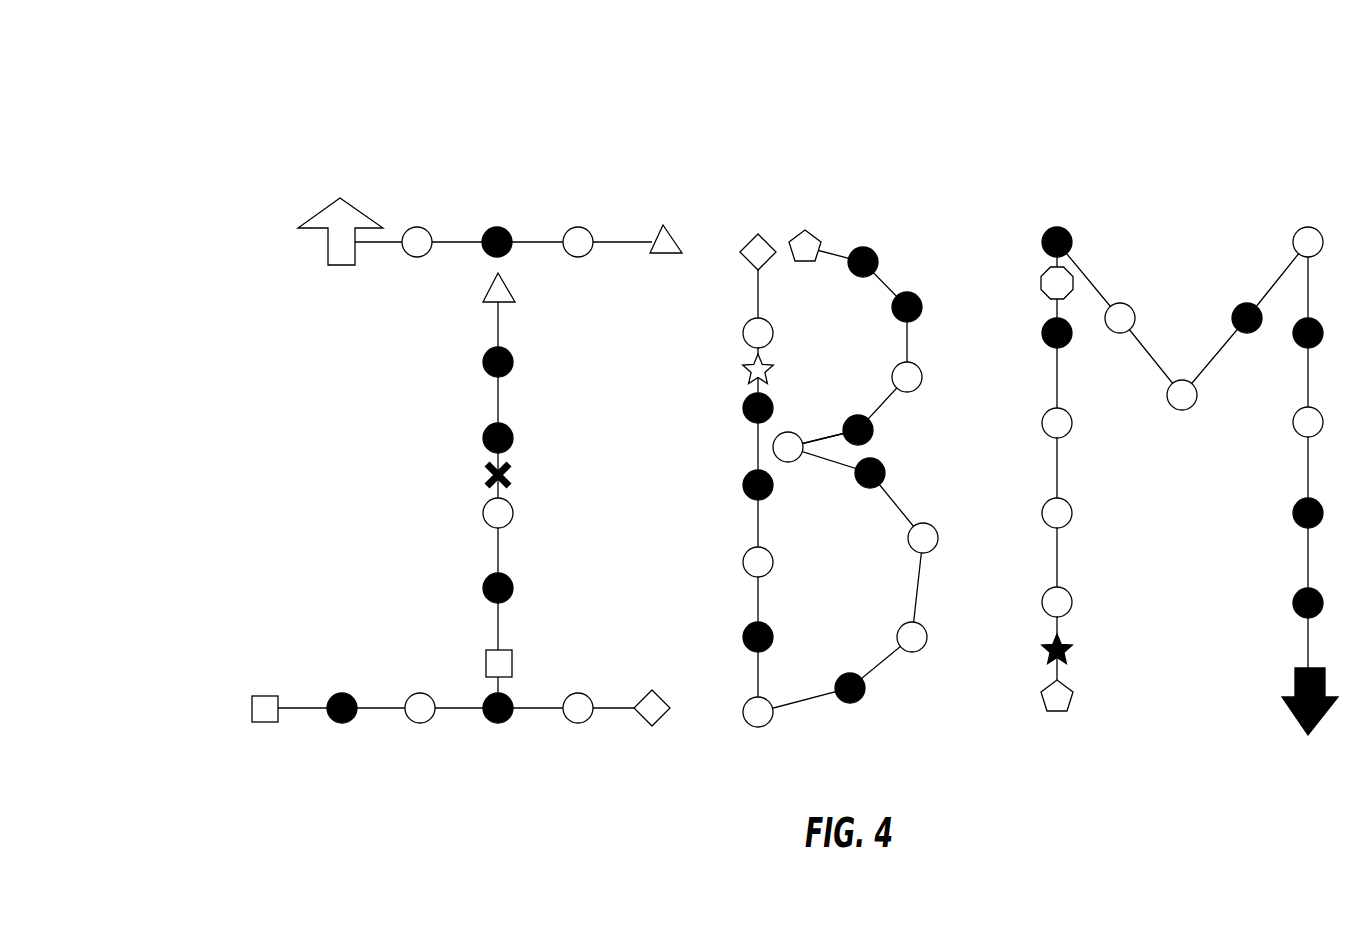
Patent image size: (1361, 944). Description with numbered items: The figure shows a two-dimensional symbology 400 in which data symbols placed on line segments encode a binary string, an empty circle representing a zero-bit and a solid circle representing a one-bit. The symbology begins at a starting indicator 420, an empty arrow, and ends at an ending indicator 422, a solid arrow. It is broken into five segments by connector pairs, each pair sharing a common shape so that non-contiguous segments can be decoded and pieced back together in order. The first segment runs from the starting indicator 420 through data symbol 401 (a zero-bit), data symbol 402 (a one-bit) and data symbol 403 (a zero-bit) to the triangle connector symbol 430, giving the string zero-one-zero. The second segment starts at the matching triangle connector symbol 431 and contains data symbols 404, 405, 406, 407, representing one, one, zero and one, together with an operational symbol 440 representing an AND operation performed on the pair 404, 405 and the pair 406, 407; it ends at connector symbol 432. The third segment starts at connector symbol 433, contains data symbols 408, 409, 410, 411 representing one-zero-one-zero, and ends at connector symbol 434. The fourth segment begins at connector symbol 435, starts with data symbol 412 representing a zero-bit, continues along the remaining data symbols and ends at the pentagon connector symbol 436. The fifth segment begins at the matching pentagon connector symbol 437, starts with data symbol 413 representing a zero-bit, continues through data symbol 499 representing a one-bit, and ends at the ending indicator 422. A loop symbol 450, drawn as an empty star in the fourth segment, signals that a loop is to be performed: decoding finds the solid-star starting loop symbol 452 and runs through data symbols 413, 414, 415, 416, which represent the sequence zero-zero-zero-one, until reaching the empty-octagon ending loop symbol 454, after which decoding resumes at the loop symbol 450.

The two-dimensional symbology 400 is at (152, 116).
The data symbol 401 is at (415, 227).
The data symbol 402 is at (495, 227).
The data symbol 403 is at (578, 227).
The data symbol 404 is at (484, 362).
The data symbol 405 is at (484, 438).
The data symbol 406 is at (484, 513).
The data symbol 407 is at (484, 588).
The data symbol 408 is at (343, 724).
The data symbol 409 is at (421, 724).
The data symbol 410 is at (499, 724).
The data symbol 411 is at (581, 724).
The data symbol 412 is at (743, 332).
The data symbol 413 is at (1042, 602).
The data symbol 414 is at (1042, 513).
The data symbol 415 is at (1042, 423).
The data symbol 416 is at (1042, 333).
The starting indicator 420 is at (327, 208).
The ending indicator 422 is at (1287, 706).
The connector symbol 430 is at (662, 228).
The connector symbol 431 is at (484, 300).
The connector symbol 432 is at (486, 663).
The connector symbol 433 is at (252, 703).
The connector symbol 434 is at (658, 720).
The connector symbol 435 is at (745, 246).
The connector symbol 436 is at (801, 232).
The connector symbol 437 is at (1059, 713).
The operational symbol 440 is at (576, 452).
The loop symbol 450 is at (745, 368).
The starting loop symbol 452 is at (1043, 650).
The ending loop symbol 454 is at (1041, 283).
The data symbol 499 is at (1293, 603).